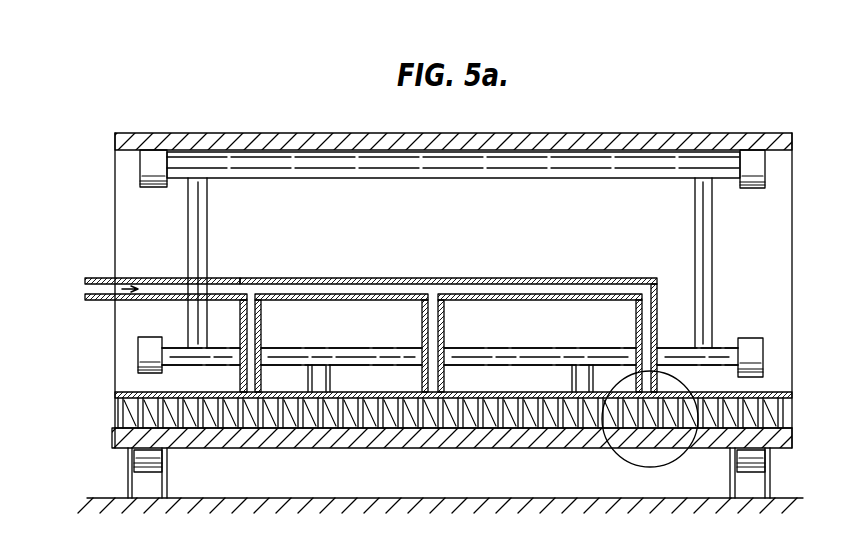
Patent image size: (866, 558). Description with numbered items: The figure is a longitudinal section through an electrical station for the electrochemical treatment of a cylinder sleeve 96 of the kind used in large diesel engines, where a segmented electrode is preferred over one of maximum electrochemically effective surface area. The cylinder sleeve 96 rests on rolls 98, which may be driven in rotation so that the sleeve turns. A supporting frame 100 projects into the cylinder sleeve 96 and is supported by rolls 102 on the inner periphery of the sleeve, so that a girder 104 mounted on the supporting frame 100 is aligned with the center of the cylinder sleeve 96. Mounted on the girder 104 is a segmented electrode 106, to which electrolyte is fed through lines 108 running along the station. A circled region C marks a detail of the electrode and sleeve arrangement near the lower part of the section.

The cylinder sleeve 96 is at (437, 133).
The rolls 98 is at (128, 461).
The supporting frame 100 is at (242, 178).
The rolls 102 is at (140, 166).
The girder 104 is at (418, 376).
The segmented electrode 106 is at (247, 430).
The lines 108 is at (352, 290).
The detail circle C is at (617, 458).